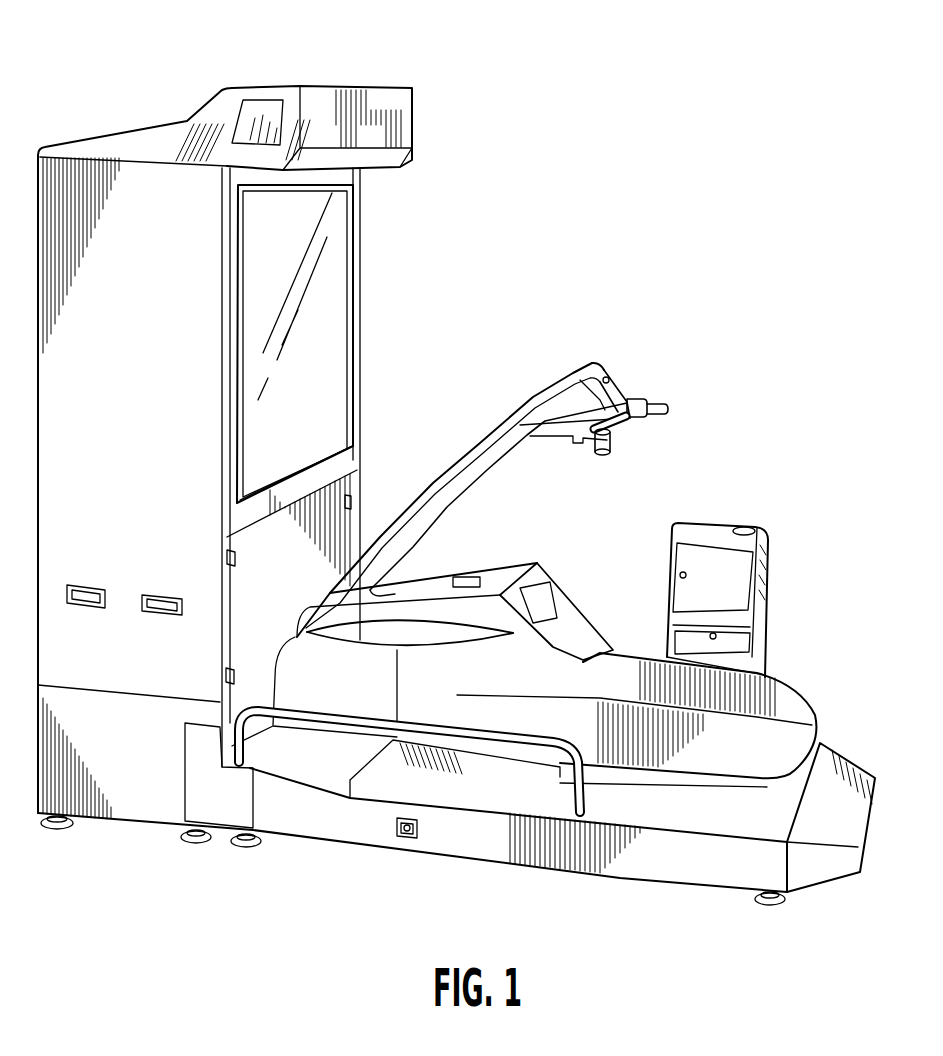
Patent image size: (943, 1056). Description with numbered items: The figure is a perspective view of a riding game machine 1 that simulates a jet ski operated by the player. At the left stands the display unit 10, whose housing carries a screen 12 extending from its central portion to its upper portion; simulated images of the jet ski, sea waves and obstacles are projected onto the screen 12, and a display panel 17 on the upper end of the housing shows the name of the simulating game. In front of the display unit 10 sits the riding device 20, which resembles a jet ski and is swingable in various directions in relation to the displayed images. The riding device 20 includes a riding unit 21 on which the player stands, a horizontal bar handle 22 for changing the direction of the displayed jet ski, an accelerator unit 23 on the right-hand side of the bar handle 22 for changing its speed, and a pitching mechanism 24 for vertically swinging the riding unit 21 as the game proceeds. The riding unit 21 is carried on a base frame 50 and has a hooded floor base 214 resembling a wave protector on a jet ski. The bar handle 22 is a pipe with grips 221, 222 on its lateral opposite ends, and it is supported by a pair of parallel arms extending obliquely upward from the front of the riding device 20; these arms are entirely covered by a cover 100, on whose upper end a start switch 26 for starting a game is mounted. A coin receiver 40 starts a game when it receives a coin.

The riding game machine 1 is at (540, 158).
The display unit 10 is at (363, 260).
The screen 12 is at (320, 338).
The display panel 17 is at (388, 112).
The riding device 20 is at (512, 562).
The riding unit 21 is at (797, 678).
The bar handle 22 is at (623, 427).
The accelerator unit 23 is at (640, 397).
The pitching mechanism 24 is at (285, 644).
The start switch 26 is at (603, 376).
The coin receiver 40 is at (767, 555).
The base frame 50 is at (458, 842).
The cover 100 is at (437, 460).
The hooded floor base 214 is at (583, 632).
The grip 221 is at (660, 403).
The grip 222 is at (607, 453).